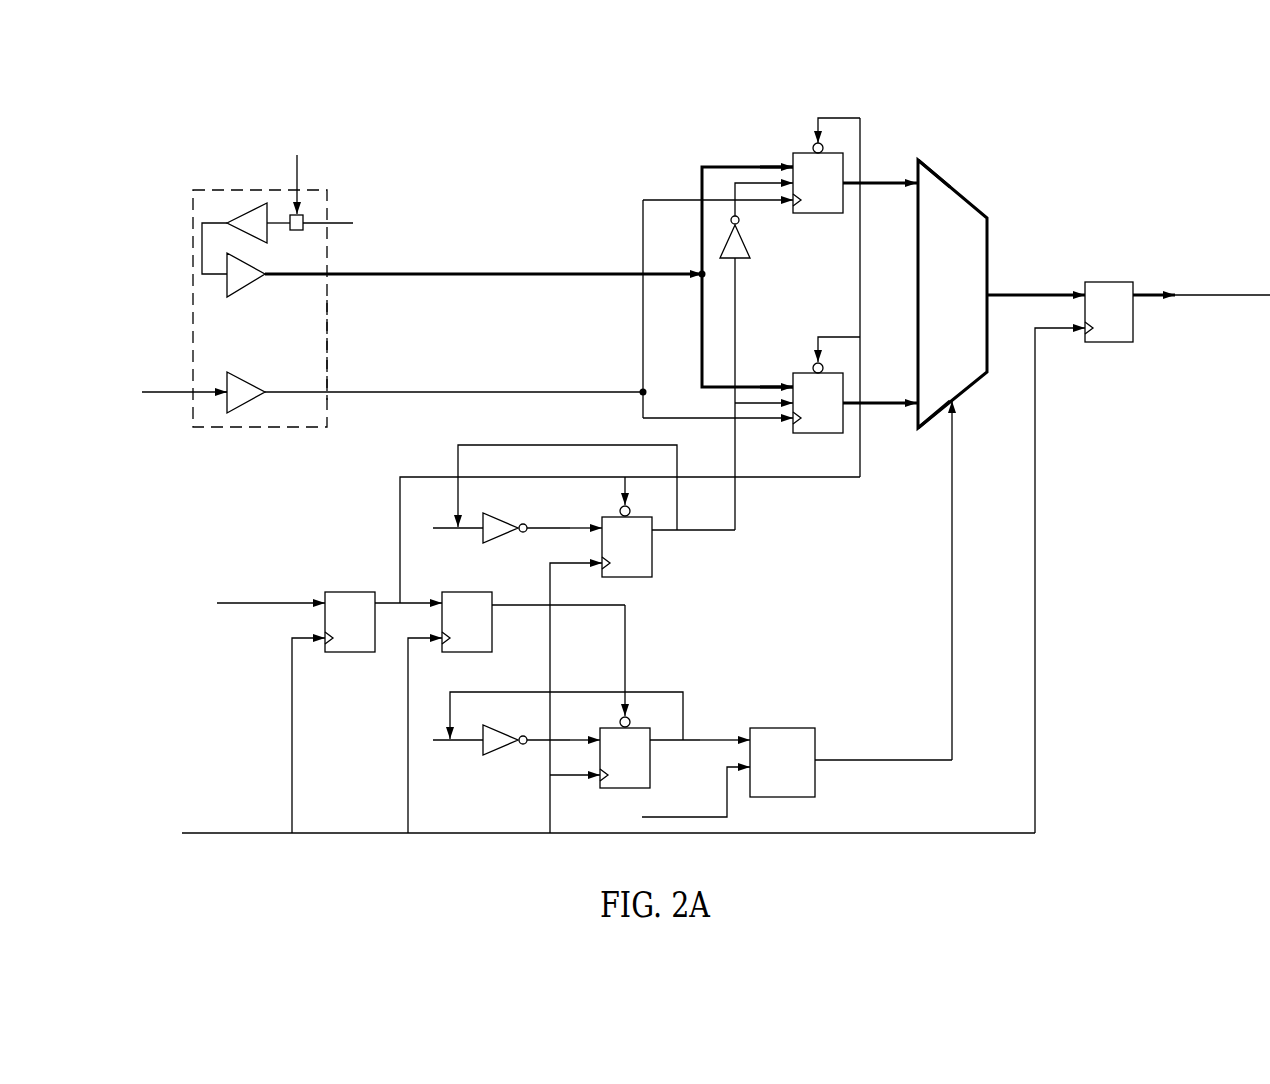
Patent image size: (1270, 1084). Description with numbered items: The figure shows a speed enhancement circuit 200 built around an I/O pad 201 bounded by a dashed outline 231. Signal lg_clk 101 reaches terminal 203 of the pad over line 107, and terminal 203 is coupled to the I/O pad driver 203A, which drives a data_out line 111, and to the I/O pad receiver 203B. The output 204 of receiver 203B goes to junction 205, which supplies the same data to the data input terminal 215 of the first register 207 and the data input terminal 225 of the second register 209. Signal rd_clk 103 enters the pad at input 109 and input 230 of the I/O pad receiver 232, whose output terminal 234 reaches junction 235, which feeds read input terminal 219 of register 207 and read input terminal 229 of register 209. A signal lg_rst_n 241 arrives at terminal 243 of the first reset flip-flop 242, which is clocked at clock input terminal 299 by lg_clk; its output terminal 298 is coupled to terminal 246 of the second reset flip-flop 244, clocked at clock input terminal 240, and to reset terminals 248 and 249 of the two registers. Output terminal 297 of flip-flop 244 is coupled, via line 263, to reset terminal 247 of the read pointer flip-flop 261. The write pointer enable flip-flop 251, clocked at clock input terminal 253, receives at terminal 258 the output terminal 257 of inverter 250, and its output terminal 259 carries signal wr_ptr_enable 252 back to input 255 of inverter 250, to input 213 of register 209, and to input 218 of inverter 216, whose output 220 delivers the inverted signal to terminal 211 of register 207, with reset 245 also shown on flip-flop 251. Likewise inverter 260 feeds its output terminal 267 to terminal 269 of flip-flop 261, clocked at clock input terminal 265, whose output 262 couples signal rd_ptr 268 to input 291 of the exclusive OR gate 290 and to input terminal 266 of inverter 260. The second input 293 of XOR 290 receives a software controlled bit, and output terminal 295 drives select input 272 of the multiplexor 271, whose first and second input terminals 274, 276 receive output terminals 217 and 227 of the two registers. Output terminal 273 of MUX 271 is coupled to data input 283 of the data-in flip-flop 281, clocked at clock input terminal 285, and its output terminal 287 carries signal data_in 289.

The speed enhancement circuit 200 is at (1120, 100).
The I/O pad 201 is at (196, 190).
The IO pad block boundary 231 is at (312, 352).
The I/O pad driver 203A is at (246, 205).
The terminal 203 is at (305, 216).
The line 107 is at (300, 168).
The signal lg_clk 101 is at (579, 481).
The data line 111 is at (330, 228).
The signal data_in 289 is at (1222, 337).
The I/O pad receiver 203B is at (248, 290).
The output 204 is at (272, 274).
The junction 205 is at (553, 291).
The input 230 is at (222, 382).
The rd_clk input 109 is at (148, 392).
The I/O pad receiver 232 is at (242, 382).
The output terminal 234 is at (262, 395).
The signal rd_clk 103 is at (521, 384).
The junction 235 is at (662, 309).
The output 220 is at (700, 175).
The terminal 211 is at (760, 166).
The input 213 is at (785, 386).
The first register 207 is at (818, 183).
The data input terminal 215 is at (790, 178).
The read input terminal 219 is at (793, 204).
The inverter 216 is at (748, 245).
The input 218 is at (740, 280).
The reset terminal 248 is at (836, 118).
The output terminal 217 is at (850, 180).
The second register 209 is at (818, 403).
The data input terminal 225 is at (790, 372).
The reset terminal 249 is at (830, 362).
The read input terminal 229 is at (760, 404).
The output terminal 227 is at (850, 400).
The multiplexor 271 is at (952, 294).
The first input terminal 274 is at (916, 165).
The second input terminal 276 is at (926, 400).
The select input 272 is at (960, 405).
The output terminal 273 is at (990, 293).
The data input 283 is at (1085, 285).
The data-in flip-flop 281 is at (1109, 312).
The output terminal 287 is at (1135, 282).
The clock input terminal 285 is at (1085, 335).
The signal lg_rst_n 241 is at (214, 606).
The terminal 243 is at (325, 600).
The first reset flip-flop 242 is at (350, 622).
The clock input terminal 299 is at (325, 645).
The output terminal 298 is at (378, 608).
The terminal 246 is at (441, 600).
The second reset flip-flop 244 is at (467, 622).
The clock input terminal 240 is at (442, 645).
The output terminal 297 is at (492, 607).
The reset line to flip-flop 261 263 is at (628, 700).
The input 255 is at (483, 530).
The inverter 250 is at (506, 524).
The output terminal 257 is at (528, 530).
The terminal 258 is at (601, 522).
The write pointer enable flip-flop 251 is at (627, 547).
The reset input of flip-flop 251 245 is at (631, 513).
The clock input terminal 253 is at (601, 566).
The output terminal 259 is at (653, 531).
The signal wr_ptr_enable 252 is at (777, 542).
The input terminal 266 is at (483, 745).
The inverter 260 is at (496, 755).
The output terminal 267 is at (526, 738).
The terminal 269 is at (599, 735).
The read pointer flip-flop 261 is at (625, 758).
The reset terminal 247 is at (632, 722).
The clock input terminal 265 is at (599, 771).
The output 262 is at (653, 745).
The signal rd_ptr 268 is at (716, 709).
The input 291 is at (750, 735).
The exclusive OR gate 290 is at (782, 762).
The second input 293 is at (750, 772).
The output terminal 295 is at (820, 765).